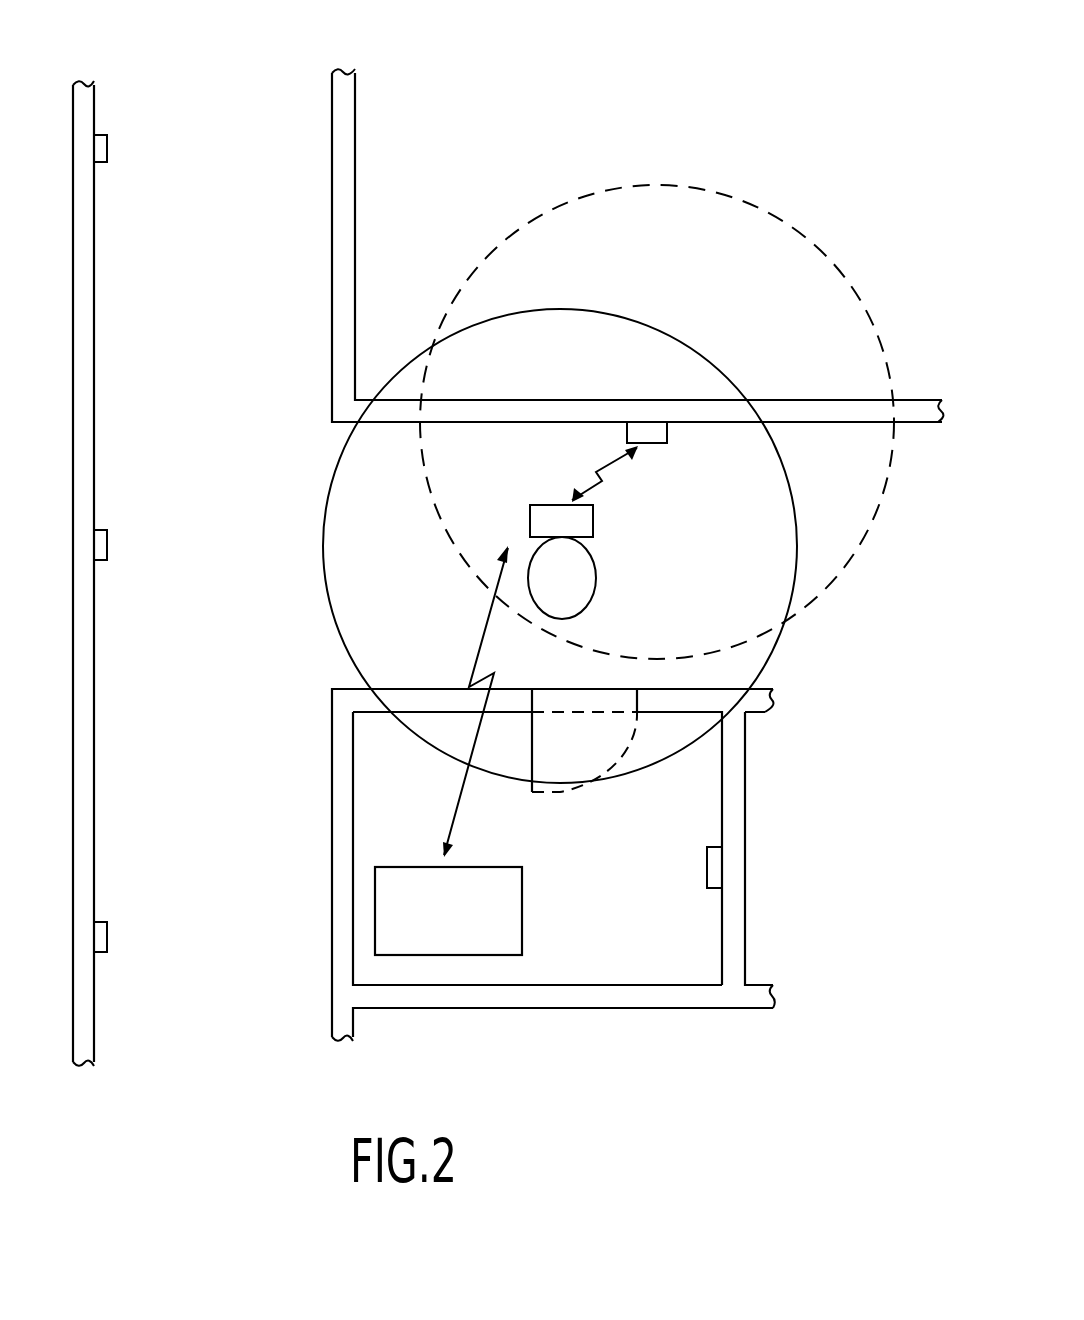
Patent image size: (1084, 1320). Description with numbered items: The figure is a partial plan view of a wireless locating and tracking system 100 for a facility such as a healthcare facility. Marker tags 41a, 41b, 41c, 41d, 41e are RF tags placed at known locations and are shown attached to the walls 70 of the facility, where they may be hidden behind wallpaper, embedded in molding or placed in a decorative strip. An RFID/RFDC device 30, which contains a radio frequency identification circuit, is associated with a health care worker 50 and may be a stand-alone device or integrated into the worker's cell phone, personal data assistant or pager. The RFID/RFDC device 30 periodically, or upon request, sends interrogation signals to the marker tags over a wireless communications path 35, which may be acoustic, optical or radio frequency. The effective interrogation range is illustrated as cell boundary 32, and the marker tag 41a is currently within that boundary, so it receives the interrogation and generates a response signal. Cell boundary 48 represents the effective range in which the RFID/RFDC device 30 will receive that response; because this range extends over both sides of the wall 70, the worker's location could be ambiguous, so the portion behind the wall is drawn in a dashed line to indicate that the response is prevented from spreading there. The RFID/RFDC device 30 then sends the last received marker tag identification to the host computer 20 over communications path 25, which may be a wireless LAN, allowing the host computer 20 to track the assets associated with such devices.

The tracking system 100 is at (630, 124).
The wall 70 is at (94, 342).
The marker tag 41a is at (627, 434).
The marker tag 41b is at (107, 148).
The marker tag 41c is at (107, 545).
The marker tag 41d is at (107, 924).
The marker tag 41e is at (707, 850).
The cell boundary 32 is at (557, 310).
The cell boundary 48 is at (862, 547).
The RFID/RFDC device 30 is at (593, 527).
The health care worker 50 is at (596, 580).
The communications path 35 is at (597, 474).
The communications path 25 is at (480, 643).
The host computer 20 is at (522, 905).